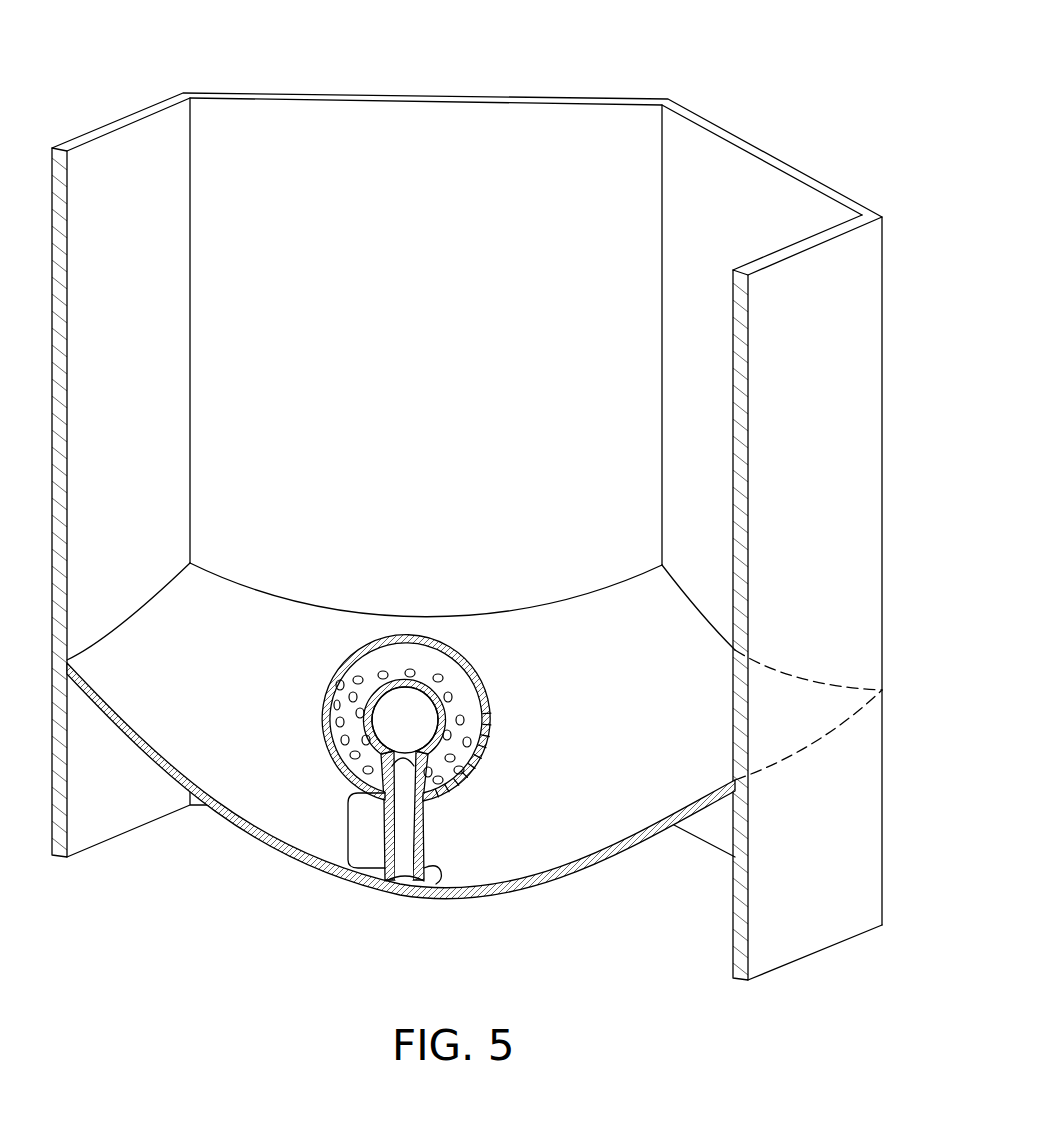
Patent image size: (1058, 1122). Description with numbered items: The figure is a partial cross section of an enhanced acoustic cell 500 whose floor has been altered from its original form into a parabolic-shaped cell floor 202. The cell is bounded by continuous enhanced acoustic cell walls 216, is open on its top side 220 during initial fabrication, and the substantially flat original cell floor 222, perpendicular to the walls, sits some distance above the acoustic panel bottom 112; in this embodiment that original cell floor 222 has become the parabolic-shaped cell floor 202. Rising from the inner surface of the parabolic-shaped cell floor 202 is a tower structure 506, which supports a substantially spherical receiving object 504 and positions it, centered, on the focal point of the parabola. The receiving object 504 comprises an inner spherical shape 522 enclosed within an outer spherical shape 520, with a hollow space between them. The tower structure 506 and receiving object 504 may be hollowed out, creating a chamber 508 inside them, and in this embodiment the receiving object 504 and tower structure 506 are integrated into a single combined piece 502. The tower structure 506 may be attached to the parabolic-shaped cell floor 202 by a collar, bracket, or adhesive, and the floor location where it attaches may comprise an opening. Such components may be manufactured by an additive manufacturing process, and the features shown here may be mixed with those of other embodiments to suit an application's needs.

The acoustic cell 500 is at (504, 509).
The top side 220 is at (439, 97).
The continuous enhanced acoustic cell walls 216 is at (845, 610).
The acoustic panel bottom 112 is at (848, 946).
The parabolic-shaped cell floor 202 is at (506, 737).
The original cell floor 222 is at (884, 689).
The combined piece 502 is at (421, 728).
The receiving object 504 is at (318, 632).
The tower structure 506 is at (348, 790).
The chamber 508 is at (400, 707).
The outer spherical shape 520 is at (449, 800).
The inner spherical shape 522 is at (431, 817).